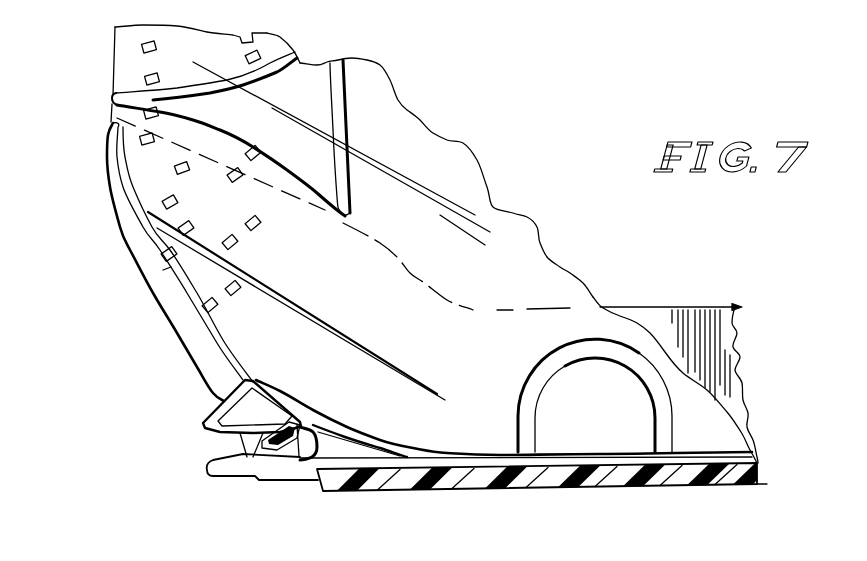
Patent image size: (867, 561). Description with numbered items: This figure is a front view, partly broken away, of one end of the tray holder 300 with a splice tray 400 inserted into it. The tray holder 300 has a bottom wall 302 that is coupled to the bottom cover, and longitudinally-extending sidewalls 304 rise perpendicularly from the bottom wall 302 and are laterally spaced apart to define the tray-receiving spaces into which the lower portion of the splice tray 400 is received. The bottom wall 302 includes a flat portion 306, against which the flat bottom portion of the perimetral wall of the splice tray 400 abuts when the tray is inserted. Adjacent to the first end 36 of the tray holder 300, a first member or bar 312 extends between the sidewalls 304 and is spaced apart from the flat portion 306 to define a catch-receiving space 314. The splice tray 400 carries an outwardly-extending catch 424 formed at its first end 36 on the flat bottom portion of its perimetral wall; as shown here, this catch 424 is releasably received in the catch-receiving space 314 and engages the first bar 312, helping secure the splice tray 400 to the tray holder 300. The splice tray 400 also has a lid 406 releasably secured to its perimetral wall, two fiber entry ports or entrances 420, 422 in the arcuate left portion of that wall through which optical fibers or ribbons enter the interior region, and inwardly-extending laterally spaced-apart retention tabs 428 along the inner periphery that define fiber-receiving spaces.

The first end 36 is at (97, 242).
The tray holder 300 is at (172, 343).
The bottom wall 302 is at (357, 498).
The sidewalls 304 is at (729, 340).
The flat portion 306 is at (650, 475).
The first member or bar 312 is at (278, 425).
The catch-receiving space 314 is at (217, 448).
The splice tray 400 is at (582, 186).
The lid 406 is at (423, 143).
The fiber entry port or entrance 420 is at (115, 51).
The fiber entry port or entrance 422 is at (112, 131).
The catch 424 is at (207, 468).
The retention tabs 428 is at (606, 348).